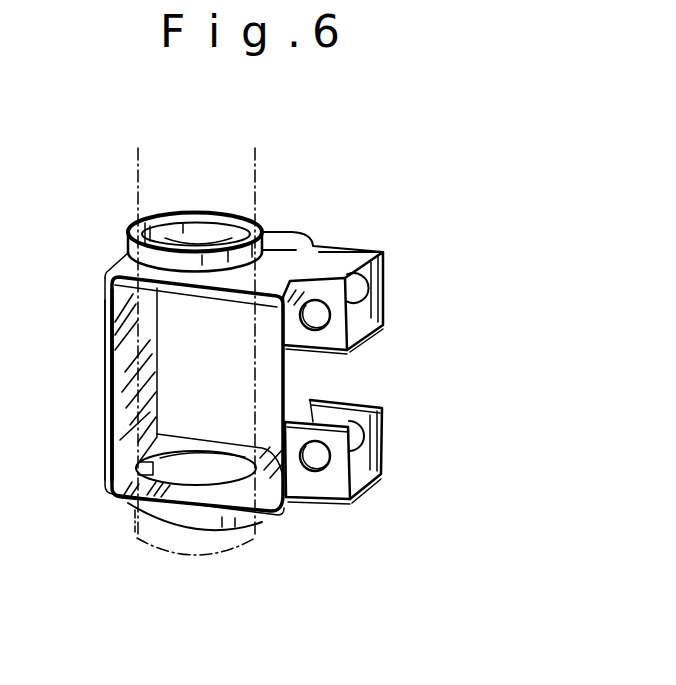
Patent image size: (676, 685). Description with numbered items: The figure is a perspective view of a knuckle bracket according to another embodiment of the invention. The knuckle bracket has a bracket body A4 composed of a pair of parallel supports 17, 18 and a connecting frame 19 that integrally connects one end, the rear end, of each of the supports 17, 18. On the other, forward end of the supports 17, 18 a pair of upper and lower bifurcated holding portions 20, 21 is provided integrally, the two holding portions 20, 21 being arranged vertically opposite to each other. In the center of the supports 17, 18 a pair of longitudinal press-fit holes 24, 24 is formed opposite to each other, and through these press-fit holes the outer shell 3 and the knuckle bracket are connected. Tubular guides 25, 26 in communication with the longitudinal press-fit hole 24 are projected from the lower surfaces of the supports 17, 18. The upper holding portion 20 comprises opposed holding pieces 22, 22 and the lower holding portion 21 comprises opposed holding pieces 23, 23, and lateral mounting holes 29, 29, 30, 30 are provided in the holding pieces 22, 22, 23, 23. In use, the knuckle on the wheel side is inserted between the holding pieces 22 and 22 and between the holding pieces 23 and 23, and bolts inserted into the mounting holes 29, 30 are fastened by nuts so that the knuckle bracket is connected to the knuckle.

The outer shell 3 is at (257, 164).
The support 17 is at (287, 240).
The support 18 is at (263, 498).
The connecting frame 19 is at (112, 339).
The holding portion 20 is at (372, 306).
The holding portion 21 is at (379, 471).
The holding piece 22 is at (358, 306).
The holding piece 23 is at (370, 471).
The longitudinal press-fit hole 24 is at (165, 385).
The tubular guide 25 is at (300, 246).
The tubular guide 26 is at (210, 518).
The mounting hole 29 is at (360, 292).
The mounting hole 30 is at (358, 447).
The bracket body A4 is at (100, 445).